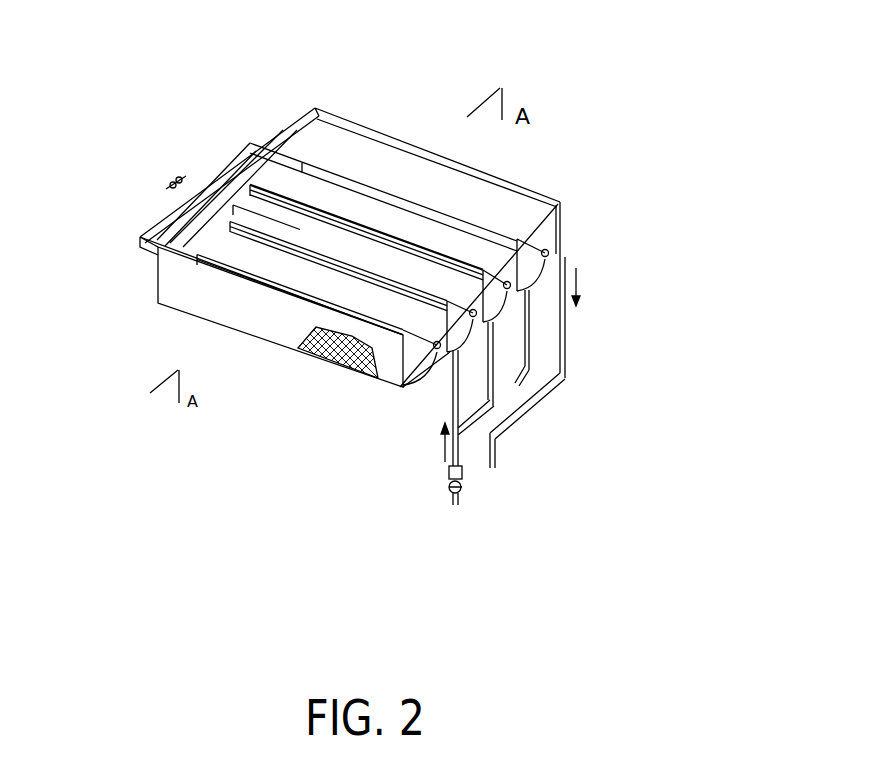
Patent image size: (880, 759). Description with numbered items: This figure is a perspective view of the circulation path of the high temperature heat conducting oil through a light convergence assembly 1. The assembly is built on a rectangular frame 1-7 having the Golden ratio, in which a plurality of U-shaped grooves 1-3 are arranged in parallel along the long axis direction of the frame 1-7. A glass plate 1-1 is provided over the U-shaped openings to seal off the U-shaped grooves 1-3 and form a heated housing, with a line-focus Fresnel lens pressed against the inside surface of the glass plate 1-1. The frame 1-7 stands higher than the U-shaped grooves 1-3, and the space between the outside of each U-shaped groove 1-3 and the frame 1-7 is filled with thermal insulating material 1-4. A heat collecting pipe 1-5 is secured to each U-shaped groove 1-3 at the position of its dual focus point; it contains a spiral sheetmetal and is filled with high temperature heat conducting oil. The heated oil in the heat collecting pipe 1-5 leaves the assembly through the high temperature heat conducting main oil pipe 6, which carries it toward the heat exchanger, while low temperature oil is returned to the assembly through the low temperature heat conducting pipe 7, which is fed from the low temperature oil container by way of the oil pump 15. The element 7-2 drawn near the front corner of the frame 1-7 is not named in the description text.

The light convergence assembly 1 is at (208, 238).
The glass plate 1-1 is at (232, 210).
The heat collecting pipe 1-5 is at (245, 183).
The frame 1-7 is at (305, 157).
The support bracket 7-2 is at (150, 240).
The thermal insulating material 1-4 is at (318, 345).
The U-shaped groove 1-3 is at (403, 385).
The low temperature heat conducting pipe 7 is at (454, 375).
The oil pump 15 is at (453, 478).
The high temperature heat conducting main oil pipe 6 is at (561, 270).